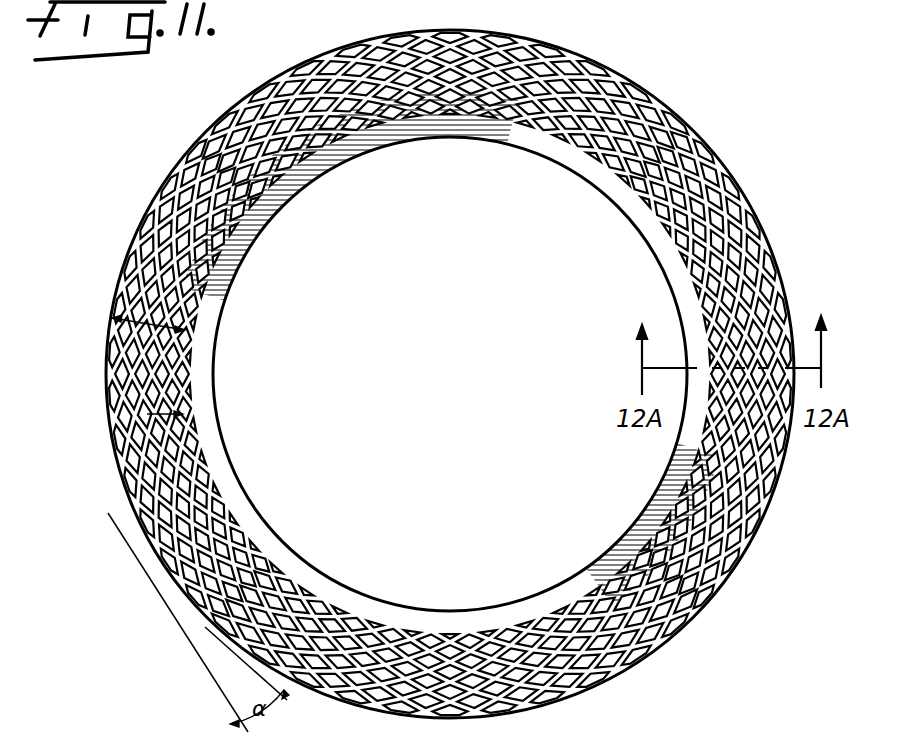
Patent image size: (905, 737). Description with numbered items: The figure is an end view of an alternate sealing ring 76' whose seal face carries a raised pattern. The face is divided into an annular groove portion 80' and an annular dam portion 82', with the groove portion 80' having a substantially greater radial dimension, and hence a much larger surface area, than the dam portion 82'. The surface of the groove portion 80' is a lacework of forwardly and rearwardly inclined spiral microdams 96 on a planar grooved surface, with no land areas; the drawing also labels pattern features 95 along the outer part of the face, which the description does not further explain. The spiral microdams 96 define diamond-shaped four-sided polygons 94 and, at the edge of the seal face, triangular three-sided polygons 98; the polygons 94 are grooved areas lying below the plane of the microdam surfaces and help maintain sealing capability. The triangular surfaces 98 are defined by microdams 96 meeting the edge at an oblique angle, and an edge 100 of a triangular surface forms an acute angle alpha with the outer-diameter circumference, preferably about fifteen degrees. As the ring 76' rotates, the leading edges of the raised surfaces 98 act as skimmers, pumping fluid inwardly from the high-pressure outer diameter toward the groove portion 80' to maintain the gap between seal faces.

The ring 76' is at (450, 374).
The groove portion 80' is at (118, 345).
The dam portion 82' is at (450, 374).
The four-sided polygons 94 is at (197, 157).
The filaments 95 is at (530, 37).
The spiral microdams 96 is at (753, 250).
The three-sided polygons 98 is at (727, 573).
The edge of the triangular surface 100 is at (193, 603).